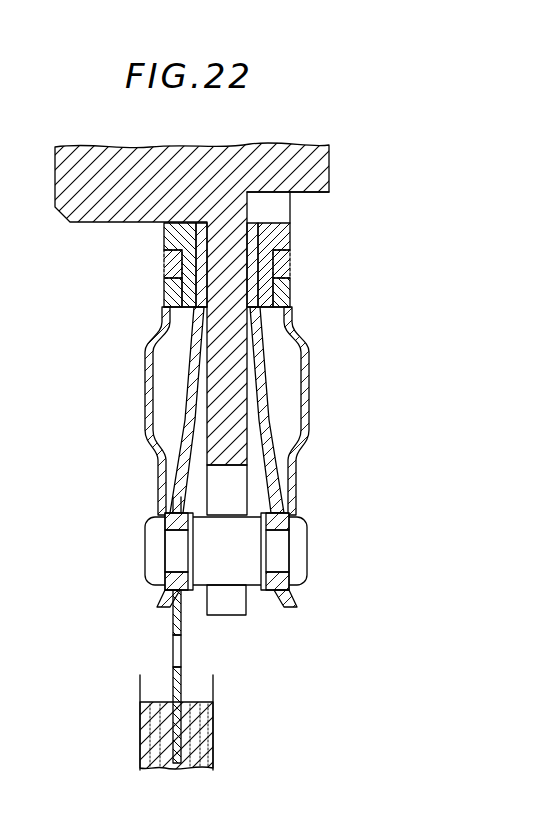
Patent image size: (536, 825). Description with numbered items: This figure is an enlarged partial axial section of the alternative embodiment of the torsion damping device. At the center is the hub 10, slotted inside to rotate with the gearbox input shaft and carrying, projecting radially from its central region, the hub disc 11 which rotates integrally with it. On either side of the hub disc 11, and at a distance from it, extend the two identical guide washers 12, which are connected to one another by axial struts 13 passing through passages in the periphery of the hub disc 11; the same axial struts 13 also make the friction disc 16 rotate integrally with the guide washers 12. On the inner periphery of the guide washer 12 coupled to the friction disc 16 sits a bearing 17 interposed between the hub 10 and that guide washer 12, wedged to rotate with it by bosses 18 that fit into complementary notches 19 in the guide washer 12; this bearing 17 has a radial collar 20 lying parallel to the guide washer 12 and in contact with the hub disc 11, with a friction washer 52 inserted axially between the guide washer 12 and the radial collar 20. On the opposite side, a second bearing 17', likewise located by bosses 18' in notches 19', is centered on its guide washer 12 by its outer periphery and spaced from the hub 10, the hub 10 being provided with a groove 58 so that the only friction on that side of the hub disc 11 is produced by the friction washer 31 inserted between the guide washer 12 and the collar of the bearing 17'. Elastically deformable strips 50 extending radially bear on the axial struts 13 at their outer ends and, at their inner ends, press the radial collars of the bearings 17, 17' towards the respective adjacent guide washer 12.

The hub 10 is at (300, 147).
The groove 58 is at (308, 197).
The bearing 17 is at (144, 265).
The bearing 17' is at (314, 249).
The bosses 18 is at (145, 264).
The bosses 18' is at (309, 264).
The notches 19 is at (150, 290).
The notches 19' is at (309, 290).
The friction washer 52 is at (172, 313).
The friction washer 31 is at (278, 312).
The radial collar 20 is at (189, 311).
The elastically deformable strips 50 is at (187, 397).
The axial struts 13 is at (148, 562).
The guide washers 12 is at (160, 608).
The hub disc 11 is at (240, 618).
The friction disc 16 is at (140, 733).